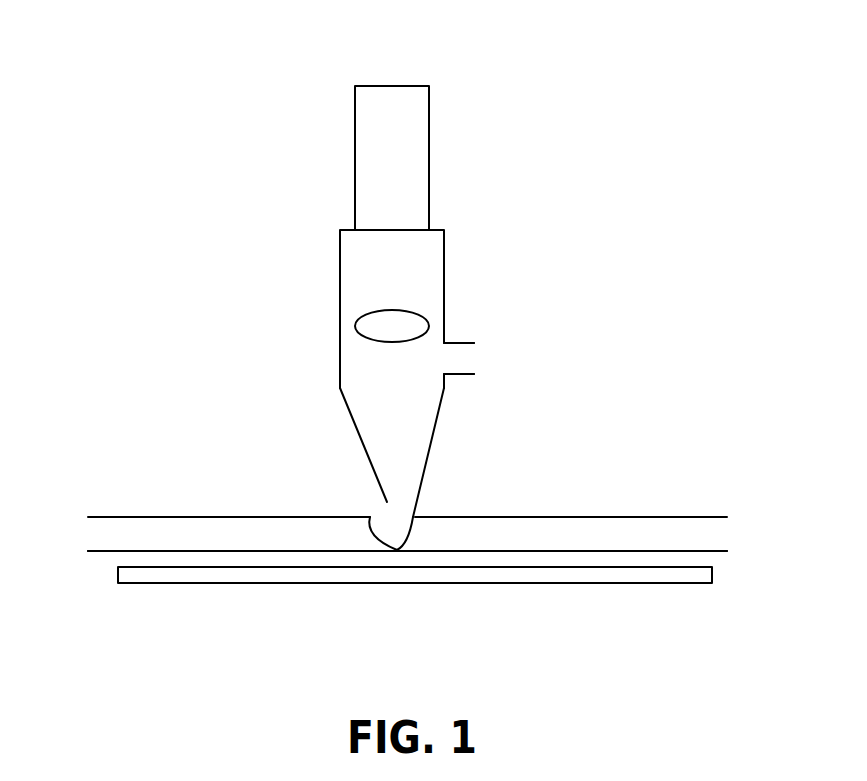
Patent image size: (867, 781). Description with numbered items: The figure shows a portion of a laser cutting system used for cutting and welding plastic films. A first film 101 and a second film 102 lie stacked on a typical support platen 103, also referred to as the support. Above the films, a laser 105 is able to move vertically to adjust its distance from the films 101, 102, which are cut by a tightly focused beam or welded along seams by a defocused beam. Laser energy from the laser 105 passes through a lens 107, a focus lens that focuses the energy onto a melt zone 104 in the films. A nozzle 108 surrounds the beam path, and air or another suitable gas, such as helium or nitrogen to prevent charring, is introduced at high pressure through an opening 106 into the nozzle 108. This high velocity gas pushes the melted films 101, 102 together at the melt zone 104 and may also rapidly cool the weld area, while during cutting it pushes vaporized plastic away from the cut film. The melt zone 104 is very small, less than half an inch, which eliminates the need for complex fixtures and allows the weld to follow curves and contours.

The first film 101 is at (118, 551).
The second film 102 is at (190, 517).
The support platen 103 is at (593, 583).
The melt zone 104 is at (398, 518).
The laser 105 is at (442, 102).
The opening 106 is at (472, 358).
The lens 107 is at (383, 311).
The nozzle 108 is at (380, 400).